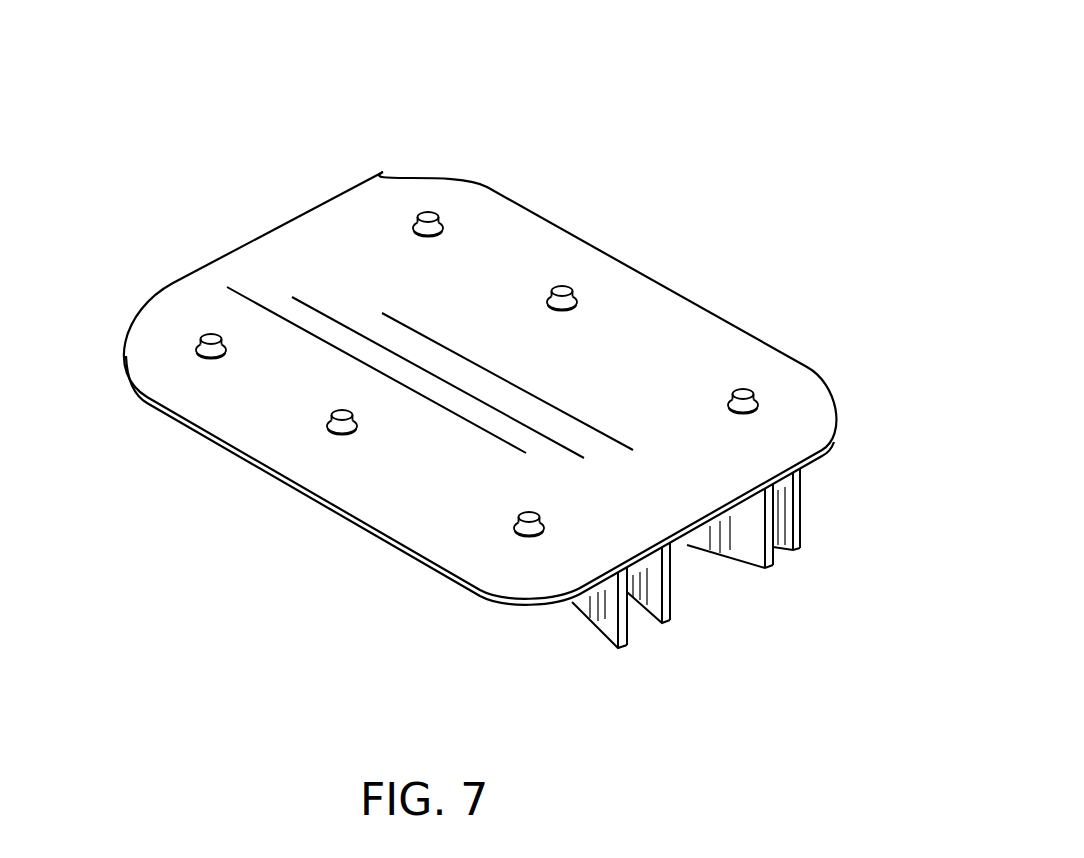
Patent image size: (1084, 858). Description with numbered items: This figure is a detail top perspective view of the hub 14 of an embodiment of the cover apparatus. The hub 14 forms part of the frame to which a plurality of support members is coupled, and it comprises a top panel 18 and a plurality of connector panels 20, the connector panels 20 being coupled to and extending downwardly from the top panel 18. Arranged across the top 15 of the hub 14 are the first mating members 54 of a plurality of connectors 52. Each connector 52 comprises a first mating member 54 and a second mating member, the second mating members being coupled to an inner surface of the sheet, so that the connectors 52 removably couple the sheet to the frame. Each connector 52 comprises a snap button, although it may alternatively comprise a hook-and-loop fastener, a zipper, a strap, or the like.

The hub 14 is at (592, 130).
The top of the hub 15 is at (504, 257).
The top panel 18 is at (807, 367).
The connector panels 20 is at (610, 624).
The connectors 52 is at (582, 268).
The first mating member 54 is at (577, 294).